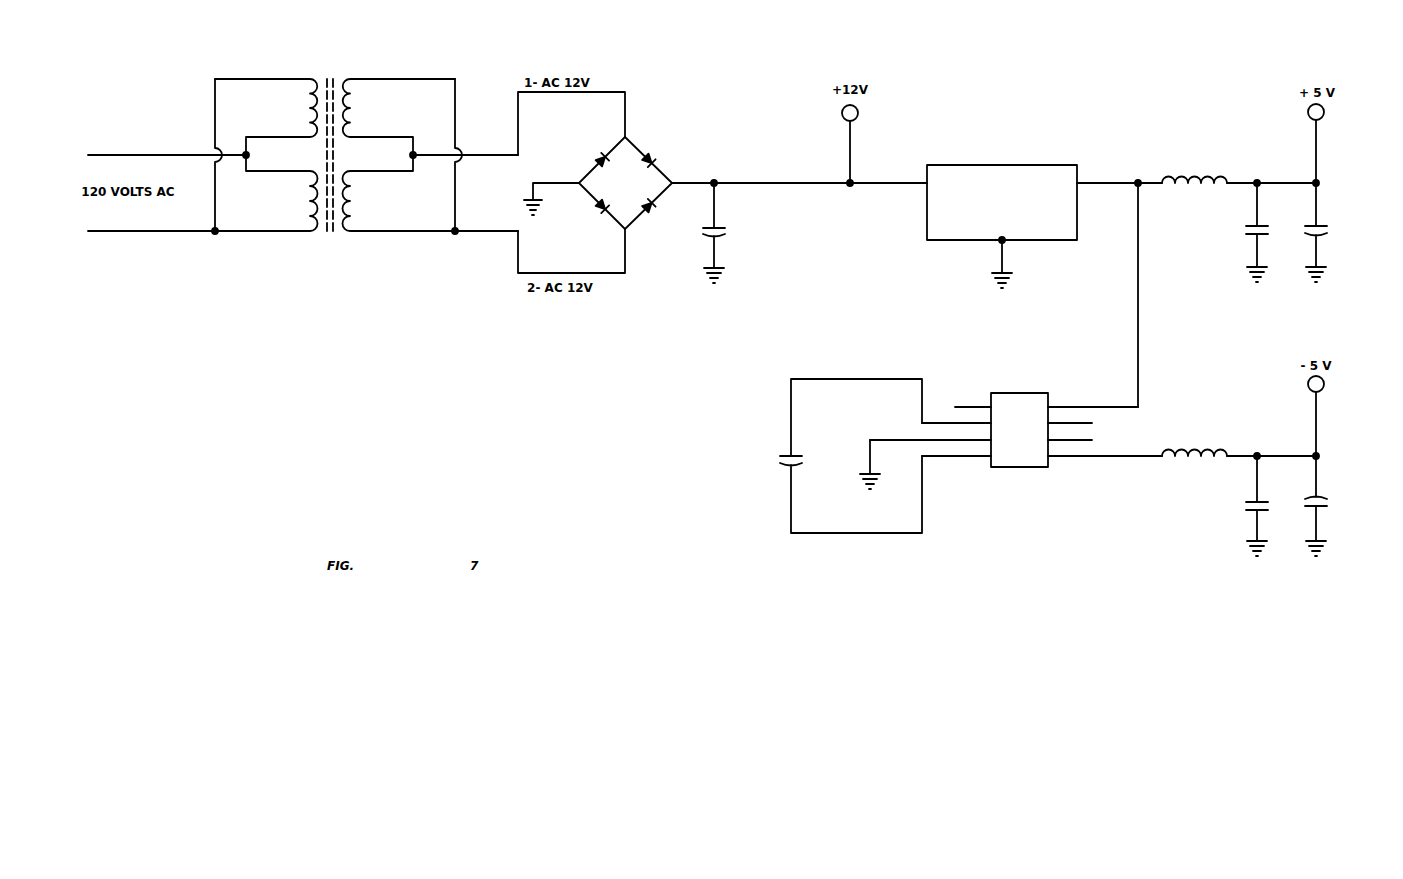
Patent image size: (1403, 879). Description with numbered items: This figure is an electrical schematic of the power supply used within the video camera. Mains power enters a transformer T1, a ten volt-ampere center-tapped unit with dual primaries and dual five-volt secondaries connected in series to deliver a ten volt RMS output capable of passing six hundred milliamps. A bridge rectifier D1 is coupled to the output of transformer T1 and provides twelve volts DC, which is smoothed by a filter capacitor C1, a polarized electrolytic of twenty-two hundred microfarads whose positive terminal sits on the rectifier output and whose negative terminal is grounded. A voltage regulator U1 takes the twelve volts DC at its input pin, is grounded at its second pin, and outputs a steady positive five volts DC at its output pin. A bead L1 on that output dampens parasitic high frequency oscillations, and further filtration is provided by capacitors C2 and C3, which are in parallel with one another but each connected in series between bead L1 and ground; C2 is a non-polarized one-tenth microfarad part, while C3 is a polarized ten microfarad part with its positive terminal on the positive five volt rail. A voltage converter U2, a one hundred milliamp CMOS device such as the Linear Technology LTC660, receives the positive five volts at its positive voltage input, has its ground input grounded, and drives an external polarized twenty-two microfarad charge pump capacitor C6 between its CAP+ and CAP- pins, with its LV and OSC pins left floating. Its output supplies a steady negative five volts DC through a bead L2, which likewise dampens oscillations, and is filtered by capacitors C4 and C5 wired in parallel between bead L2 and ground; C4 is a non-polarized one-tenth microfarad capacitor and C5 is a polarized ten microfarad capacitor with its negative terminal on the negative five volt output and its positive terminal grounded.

The transformer T1 is at (366, 139).
The bridge rectifier D1 is at (610, 173).
The filter capacitor C1 is at (751, 233).
The voltage regulator U1 is at (1001, 210).
The bead L1 is at (1194, 181).
The capacitor C2 is at (1232, 232).
The capacitor C3 is at (1346, 232).
The voltage converter U2 is at (1011, 432).
The charge pump capacitor C6 is at (827, 456).
The bead L2 is at (1194, 453).
The capacitor C4 is at (1232, 506).
The capacitor C5 is at (1345, 506).